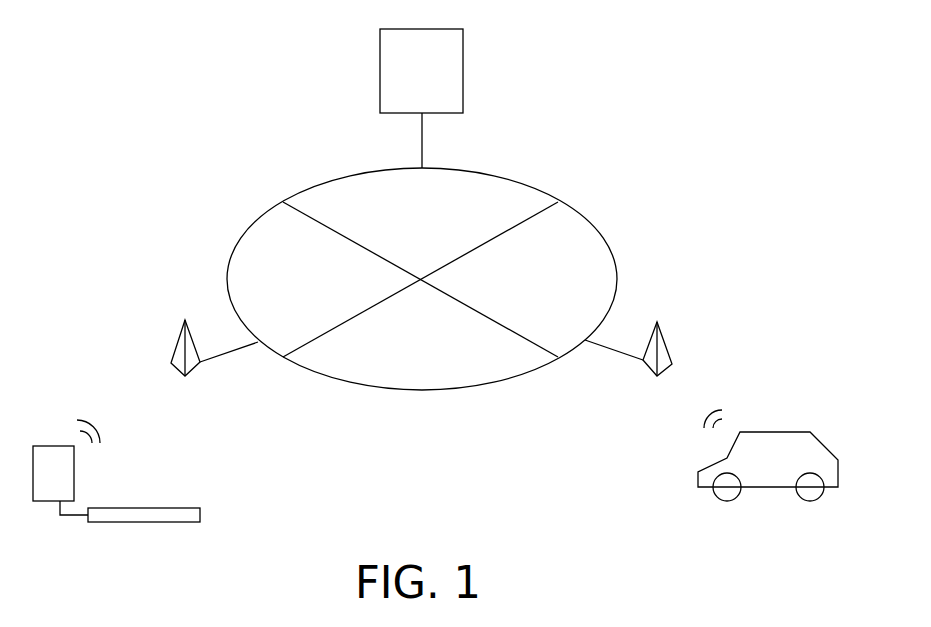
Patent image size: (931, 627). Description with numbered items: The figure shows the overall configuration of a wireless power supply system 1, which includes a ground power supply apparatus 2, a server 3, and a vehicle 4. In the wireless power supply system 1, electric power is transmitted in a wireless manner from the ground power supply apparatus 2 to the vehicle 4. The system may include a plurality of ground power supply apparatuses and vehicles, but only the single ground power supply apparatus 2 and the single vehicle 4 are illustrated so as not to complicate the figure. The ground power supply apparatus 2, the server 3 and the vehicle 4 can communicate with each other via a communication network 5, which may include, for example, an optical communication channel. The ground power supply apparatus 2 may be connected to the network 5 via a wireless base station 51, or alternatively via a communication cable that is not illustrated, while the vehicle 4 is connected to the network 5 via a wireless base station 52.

The wireless power supply system 1 is at (114, 52).
The ground power supply apparatus 2 is at (134, 452).
The server 3 is at (380, 41).
The vehicle 4 is at (783, 432).
The communication network 5 is at (270, 207).
The wireless base station 51 is at (185, 345).
The wireless base station 52 is at (660, 345).